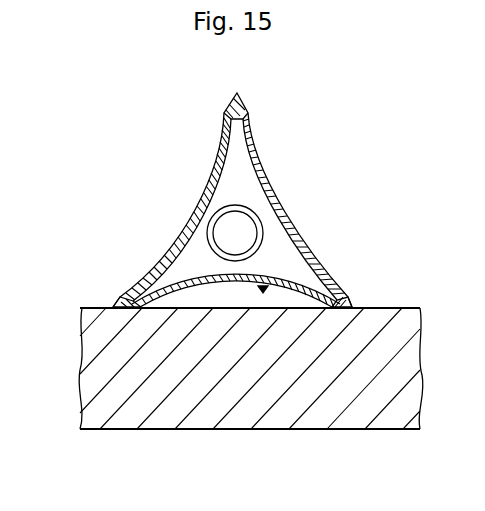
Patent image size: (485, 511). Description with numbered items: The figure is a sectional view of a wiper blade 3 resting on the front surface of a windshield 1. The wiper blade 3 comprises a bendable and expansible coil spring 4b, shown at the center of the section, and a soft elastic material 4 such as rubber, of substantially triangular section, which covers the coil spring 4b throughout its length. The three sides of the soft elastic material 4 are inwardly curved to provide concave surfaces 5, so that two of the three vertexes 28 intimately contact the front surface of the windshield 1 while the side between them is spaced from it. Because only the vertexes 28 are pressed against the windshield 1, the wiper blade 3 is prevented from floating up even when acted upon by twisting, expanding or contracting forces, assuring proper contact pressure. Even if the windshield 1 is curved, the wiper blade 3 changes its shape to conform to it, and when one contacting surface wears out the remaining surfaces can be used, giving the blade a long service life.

The windshield 1 is at (235, 417).
The wiper blade 3 is at (287, 233).
The soft elastic material 4 is at (257, 181).
The coil spring 4b is at (204, 222).
The concave surfaces 5 is at (218, 160).
The vertexes 28 is at (246, 102).